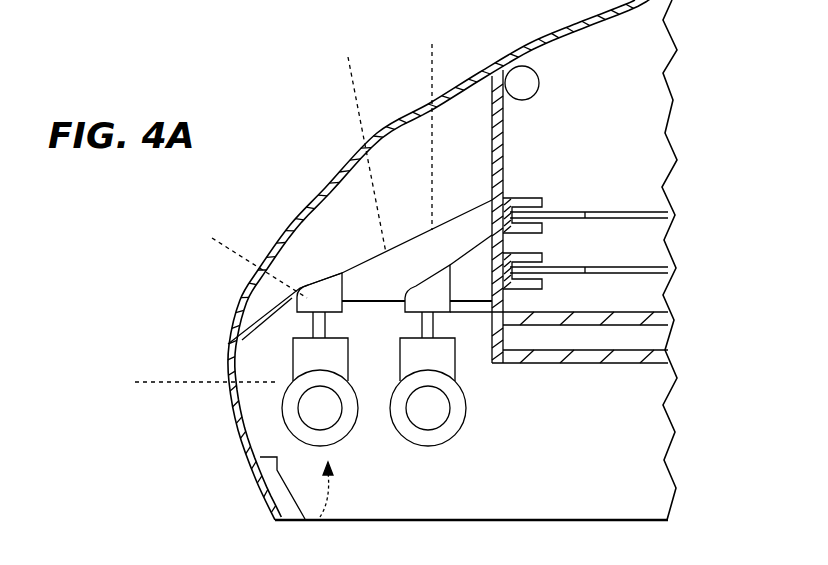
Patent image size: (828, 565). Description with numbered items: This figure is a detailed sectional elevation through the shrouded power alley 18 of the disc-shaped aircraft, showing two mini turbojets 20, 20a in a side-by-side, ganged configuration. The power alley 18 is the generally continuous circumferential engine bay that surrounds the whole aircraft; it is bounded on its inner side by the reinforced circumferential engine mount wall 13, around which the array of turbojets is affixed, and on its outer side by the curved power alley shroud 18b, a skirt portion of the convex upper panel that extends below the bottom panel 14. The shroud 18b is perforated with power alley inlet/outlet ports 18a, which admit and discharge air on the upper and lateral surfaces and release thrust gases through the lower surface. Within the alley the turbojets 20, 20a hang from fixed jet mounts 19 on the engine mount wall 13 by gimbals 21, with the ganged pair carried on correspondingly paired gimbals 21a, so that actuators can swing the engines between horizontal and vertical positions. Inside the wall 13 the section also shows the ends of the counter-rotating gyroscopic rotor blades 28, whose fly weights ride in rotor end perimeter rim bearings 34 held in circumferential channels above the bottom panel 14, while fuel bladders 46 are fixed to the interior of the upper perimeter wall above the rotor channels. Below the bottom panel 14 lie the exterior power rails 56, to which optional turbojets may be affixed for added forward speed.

The reinforced circumferential engine mount wall 13 is at (498, 147).
The bottom panel of disc-shaped aircraft 14 is at (640, 318).
The power alley 18 is at (320, 517).
The power alley inlet/outlet ports 18a is at (380, 137).
The power alley shroud 18b is at (233, 421).
The jet mounts 19 is at (464, 293).
The mini turbojets 20 is at (432, 438).
The mini turbojets 20a is at (330, 438).
The gimbals 21 is at (435, 268).
The paired gimbals 21a is at (313, 333).
The counter-rotating gyroscopic rotor blades 28 is at (648, 267).
The rotor end perimeter rim bearings 34 is at (538, 258).
The fuel bladders 46 is at (520, 66).
The exterior power rails 56 is at (637, 353).